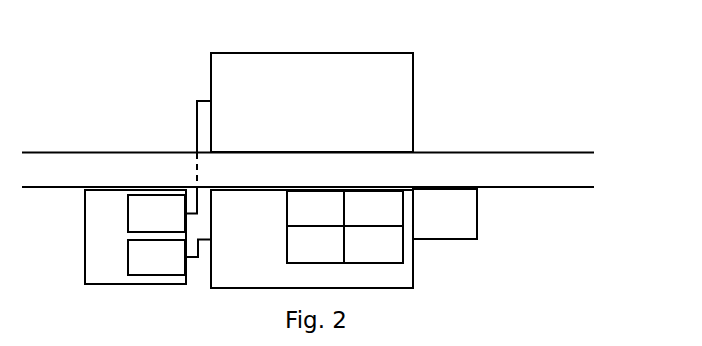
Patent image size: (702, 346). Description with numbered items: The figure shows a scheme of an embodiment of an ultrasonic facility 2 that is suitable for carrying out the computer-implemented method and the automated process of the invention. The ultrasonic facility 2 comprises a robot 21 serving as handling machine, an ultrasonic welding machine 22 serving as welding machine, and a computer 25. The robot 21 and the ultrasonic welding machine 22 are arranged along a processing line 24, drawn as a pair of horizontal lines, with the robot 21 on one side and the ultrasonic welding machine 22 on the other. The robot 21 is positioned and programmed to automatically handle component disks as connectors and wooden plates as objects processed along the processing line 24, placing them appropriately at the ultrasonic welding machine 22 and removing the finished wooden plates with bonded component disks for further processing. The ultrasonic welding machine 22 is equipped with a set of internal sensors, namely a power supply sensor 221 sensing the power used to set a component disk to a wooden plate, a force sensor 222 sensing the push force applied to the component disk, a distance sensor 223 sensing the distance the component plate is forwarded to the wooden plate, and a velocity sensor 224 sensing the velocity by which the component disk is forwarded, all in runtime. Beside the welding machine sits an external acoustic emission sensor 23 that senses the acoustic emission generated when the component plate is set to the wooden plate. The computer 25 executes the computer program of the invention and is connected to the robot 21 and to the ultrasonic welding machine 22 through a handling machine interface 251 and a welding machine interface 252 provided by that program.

The ultrasonic facility 2 is at (308, 170).
The robot 21 is at (305, 120).
The ultrasonic welding machine 22 is at (312, 239).
The power supply sensor 221 is at (373, 208).
The force sensor 222 is at (373, 244).
The distance sensor 223 is at (315, 208).
The velocity sensor 224 is at (315, 244).
The external acoustic emission sensor 23 is at (445, 214).
The processing line 24 is at (308, 170).
The computer 25 is at (148, 235).
The handling machine interface 251 is at (162, 209).
The welding machine interface 252 is at (169, 258).